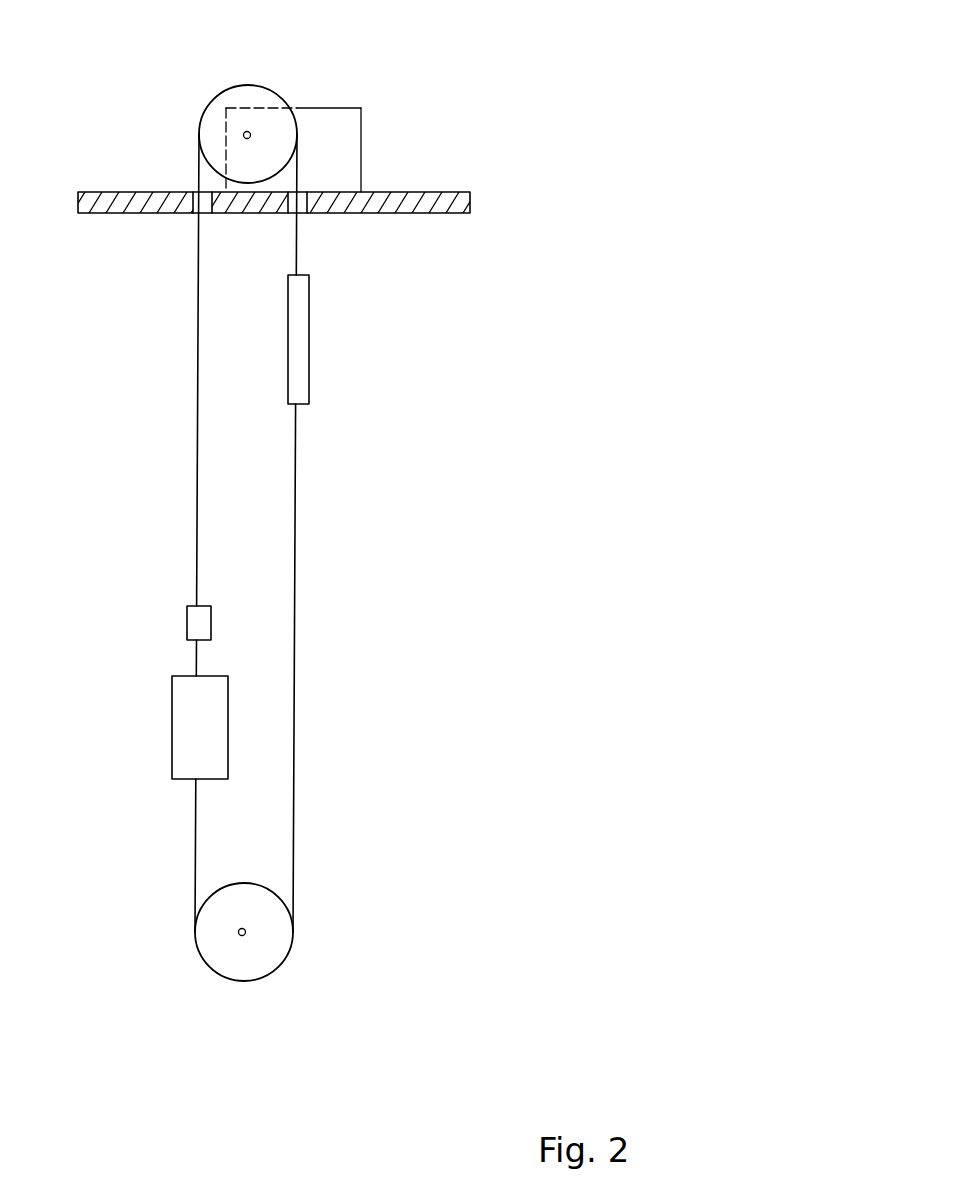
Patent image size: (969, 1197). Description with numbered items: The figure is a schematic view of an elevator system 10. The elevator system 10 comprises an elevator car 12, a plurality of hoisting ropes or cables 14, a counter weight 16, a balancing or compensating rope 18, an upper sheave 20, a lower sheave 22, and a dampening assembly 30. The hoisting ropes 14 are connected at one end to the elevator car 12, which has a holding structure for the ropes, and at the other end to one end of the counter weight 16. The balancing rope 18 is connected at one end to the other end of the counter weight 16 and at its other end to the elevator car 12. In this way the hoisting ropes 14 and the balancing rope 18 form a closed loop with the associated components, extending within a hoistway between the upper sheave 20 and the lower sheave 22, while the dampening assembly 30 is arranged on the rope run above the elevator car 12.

The elevator system 10 is at (591, 124).
The elevator car 12 is at (172, 750).
The hoisting ropes 14 is at (200, 293).
The counter weight 16 is at (311, 293).
The balancing rope 18 is at (295, 573).
The upper sheave 20 is at (267, 83).
The lower sheave 22 is at (252, 983).
The dampening assembly 30 is at (188, 640).